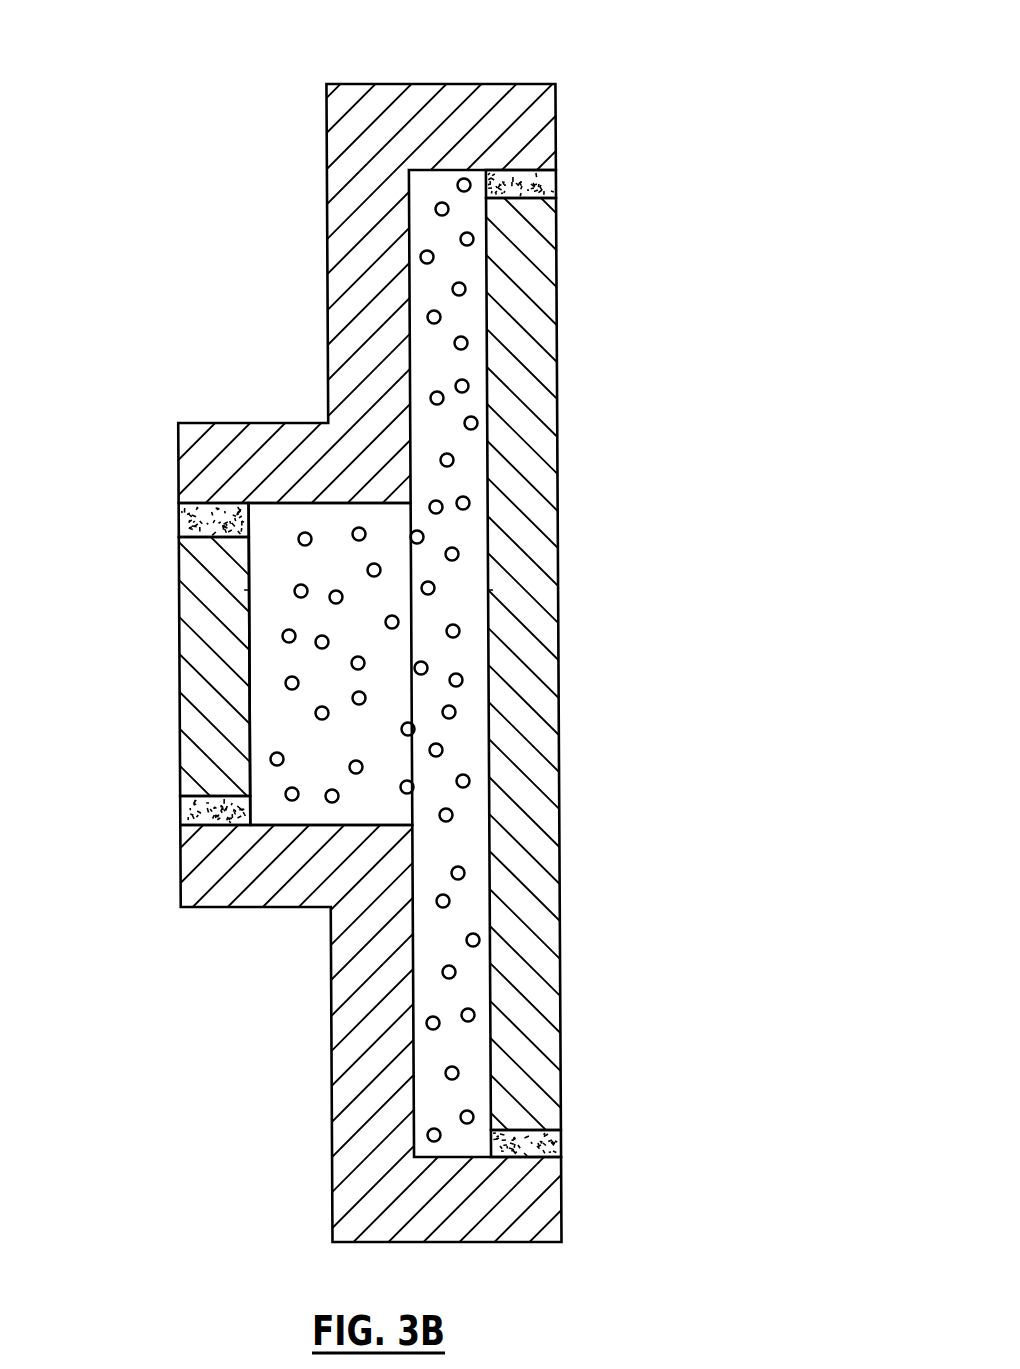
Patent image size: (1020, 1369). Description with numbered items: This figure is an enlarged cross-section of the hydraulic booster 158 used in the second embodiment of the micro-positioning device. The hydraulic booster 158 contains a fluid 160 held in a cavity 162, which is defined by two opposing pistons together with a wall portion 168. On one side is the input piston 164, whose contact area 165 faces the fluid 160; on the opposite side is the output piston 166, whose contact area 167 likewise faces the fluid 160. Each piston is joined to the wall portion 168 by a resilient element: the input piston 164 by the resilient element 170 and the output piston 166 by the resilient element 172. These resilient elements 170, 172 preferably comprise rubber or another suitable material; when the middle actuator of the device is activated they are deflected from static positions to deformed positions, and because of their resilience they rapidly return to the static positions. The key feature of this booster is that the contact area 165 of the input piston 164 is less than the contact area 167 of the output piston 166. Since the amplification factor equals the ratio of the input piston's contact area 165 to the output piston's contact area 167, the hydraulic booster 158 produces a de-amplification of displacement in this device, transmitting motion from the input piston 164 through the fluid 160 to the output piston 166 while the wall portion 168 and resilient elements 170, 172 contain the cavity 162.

The hydraulic booster 158 is at (313, 134).
The fluid 160 is at (389, 748).
The cavity 162 is at (320, 517).
The input piston 164 is at (178, 624).
The contact area 165 is at (248, 579).
The output piston 166 is at (558, 725).
The contact area 167 is at (490, 598).
The wall portion 168 is at (474, 84).
The resilient element 170 is at (178, 513).
The resilient element 172 is at (555, 184).